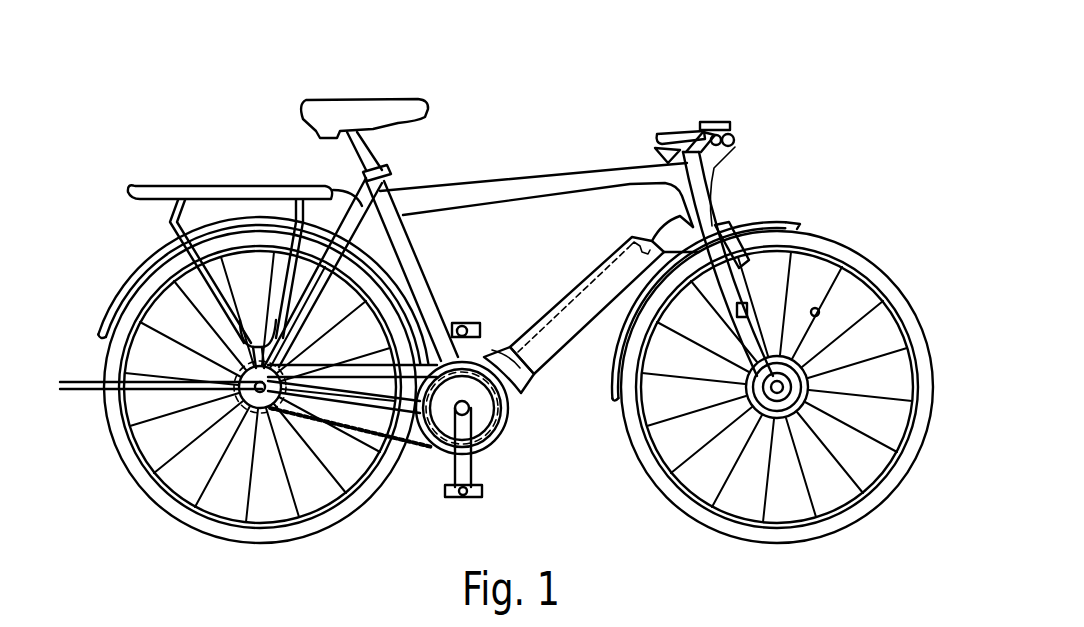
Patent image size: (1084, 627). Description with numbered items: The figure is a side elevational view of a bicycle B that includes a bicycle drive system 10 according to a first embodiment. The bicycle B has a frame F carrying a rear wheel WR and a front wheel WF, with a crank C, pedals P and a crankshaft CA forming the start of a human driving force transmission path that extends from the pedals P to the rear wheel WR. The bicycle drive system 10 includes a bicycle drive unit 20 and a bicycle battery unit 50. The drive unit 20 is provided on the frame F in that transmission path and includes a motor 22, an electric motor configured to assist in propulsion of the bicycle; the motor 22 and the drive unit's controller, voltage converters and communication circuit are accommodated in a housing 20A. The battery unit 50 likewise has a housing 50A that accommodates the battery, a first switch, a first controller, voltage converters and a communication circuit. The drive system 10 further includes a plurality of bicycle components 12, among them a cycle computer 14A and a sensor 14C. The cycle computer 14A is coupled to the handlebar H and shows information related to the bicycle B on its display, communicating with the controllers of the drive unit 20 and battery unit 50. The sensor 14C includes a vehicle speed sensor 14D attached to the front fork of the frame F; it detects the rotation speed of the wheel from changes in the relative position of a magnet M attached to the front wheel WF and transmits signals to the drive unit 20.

The bicycle B is at (635, 73).
The bicycle drive system 10 is at (587, 470).
The frame F is at (531, 181).
The rear wheel WR is at (102, 350).
The front wheel WF is at (840, 238).
The crankshaft CA is at (431, 452).
The crank C is at (456, 472).
The pedals P is at (477, 498).
The bicycle drive unit 20 is at (523, 394).
The housing 20A is at (500, 350).
The motor 22 is at (507, 438).
The bicycle battery unit 50 is at (590, 281).
The housing 50A is at (579, 325).
The handlebar H is at (740, 136).
The bicycle components 12 is at (802, 196).
The cycle computer 14A is at (715, 121).
The sensor 14C is at (810, 238).
The vehicle speed sensor 14D is at (752, 300).
The magnet M is at (821, 311).